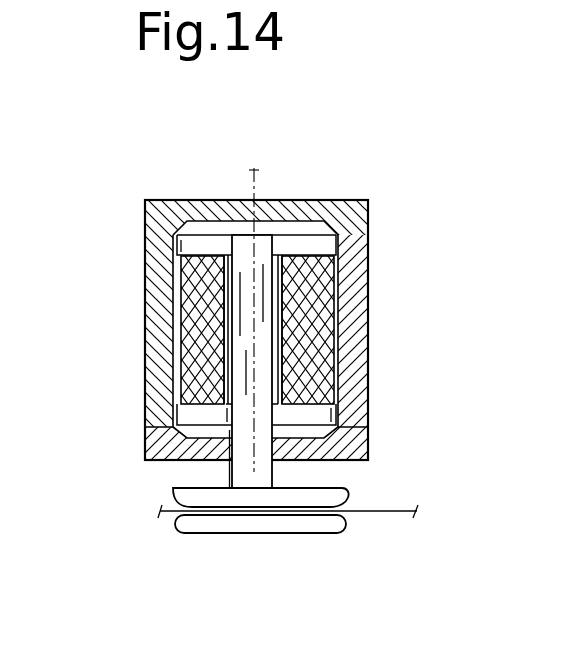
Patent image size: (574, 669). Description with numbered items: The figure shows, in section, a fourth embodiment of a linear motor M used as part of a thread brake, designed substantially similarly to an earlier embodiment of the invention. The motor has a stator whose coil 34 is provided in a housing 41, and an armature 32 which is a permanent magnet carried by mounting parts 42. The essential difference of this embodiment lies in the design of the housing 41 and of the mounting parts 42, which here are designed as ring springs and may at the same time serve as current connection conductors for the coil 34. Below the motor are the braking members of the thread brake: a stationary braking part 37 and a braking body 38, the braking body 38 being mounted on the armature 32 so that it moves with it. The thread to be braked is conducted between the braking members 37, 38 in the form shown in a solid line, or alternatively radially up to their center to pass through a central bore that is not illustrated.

The linear motor M is at (345, 160).
The armature 32 is at (224, 473).
The coil 34 is at (195, 273).
The stationary braking part 37 is at (295, 527).
The braking body 38 is at (327, 497).
The housing 41 is at (162, 323).
The mounting parts 42 is at (208, 230).